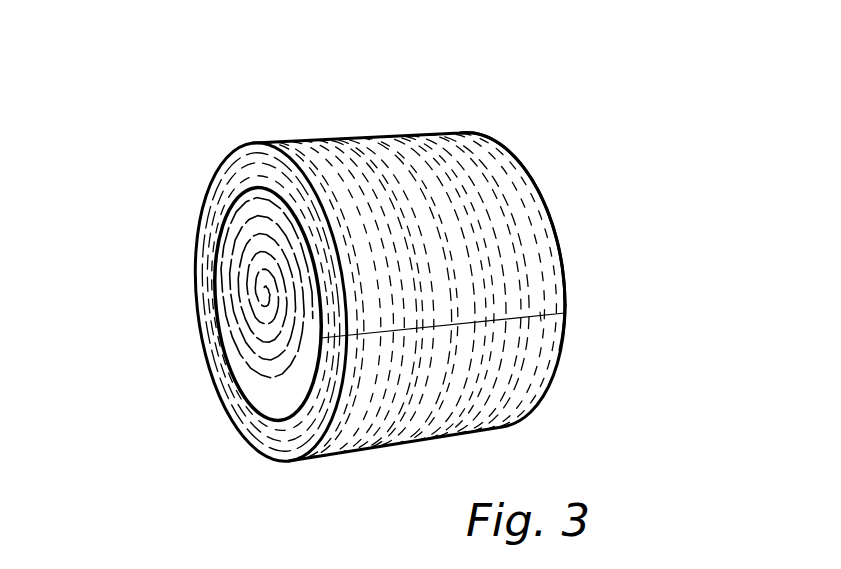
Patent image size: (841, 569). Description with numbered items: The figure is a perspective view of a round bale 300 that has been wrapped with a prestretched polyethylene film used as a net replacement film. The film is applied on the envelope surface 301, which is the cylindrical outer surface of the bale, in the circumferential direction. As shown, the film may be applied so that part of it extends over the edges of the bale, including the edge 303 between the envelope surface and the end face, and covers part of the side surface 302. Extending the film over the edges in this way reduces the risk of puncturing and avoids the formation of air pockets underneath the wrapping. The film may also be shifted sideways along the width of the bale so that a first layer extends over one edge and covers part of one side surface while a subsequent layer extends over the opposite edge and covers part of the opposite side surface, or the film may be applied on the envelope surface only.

The round bale 300 is at (136, 113).
The envelope surface 301 is at (453, 373).
The side surface 302 is at (233, 367).
The edge 303 is at (200, 272).